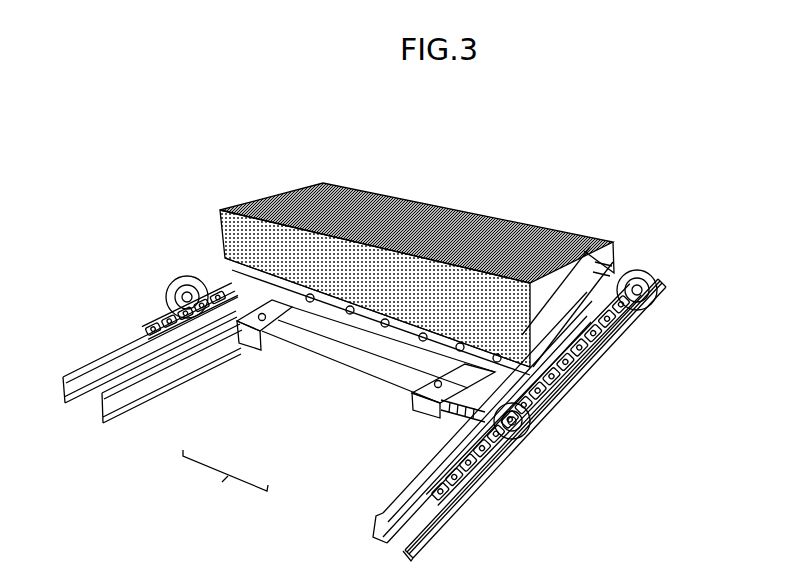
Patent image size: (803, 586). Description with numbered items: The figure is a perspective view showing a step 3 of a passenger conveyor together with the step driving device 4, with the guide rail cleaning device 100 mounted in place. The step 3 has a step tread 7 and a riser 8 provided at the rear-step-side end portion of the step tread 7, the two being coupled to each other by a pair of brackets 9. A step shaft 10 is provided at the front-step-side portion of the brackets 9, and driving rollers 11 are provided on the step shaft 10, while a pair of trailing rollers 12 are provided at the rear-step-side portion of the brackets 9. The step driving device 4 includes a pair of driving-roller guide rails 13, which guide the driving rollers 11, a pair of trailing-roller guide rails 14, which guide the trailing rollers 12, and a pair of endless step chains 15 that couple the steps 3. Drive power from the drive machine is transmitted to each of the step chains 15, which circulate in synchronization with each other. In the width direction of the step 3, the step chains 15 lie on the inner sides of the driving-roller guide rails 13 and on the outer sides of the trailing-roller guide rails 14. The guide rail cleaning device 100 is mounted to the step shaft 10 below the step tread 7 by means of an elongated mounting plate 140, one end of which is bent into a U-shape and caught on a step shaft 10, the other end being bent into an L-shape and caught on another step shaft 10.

The step 3 is at (493, 203).
The step driving device 4 is at (500, 473).
The step tread 7 is at (536, 224).
The riser 8 is at (357, 318).
The brackets 9 is at (583, 233).
The step shaft 10 is at (292, 333).
The driving rollers 11 is at (181, 272).
The trailing rollers 12 is at (248, 353).
The driving-roller guide rails 13 is at (463, 523).
The trailing-roller guide rails 14 is at (383, 512).
The step chains 15 is at (437, 456).
The guide rail cleaning device 100 is at (224, 525).
The mounting plate 140 is at (248, 345).